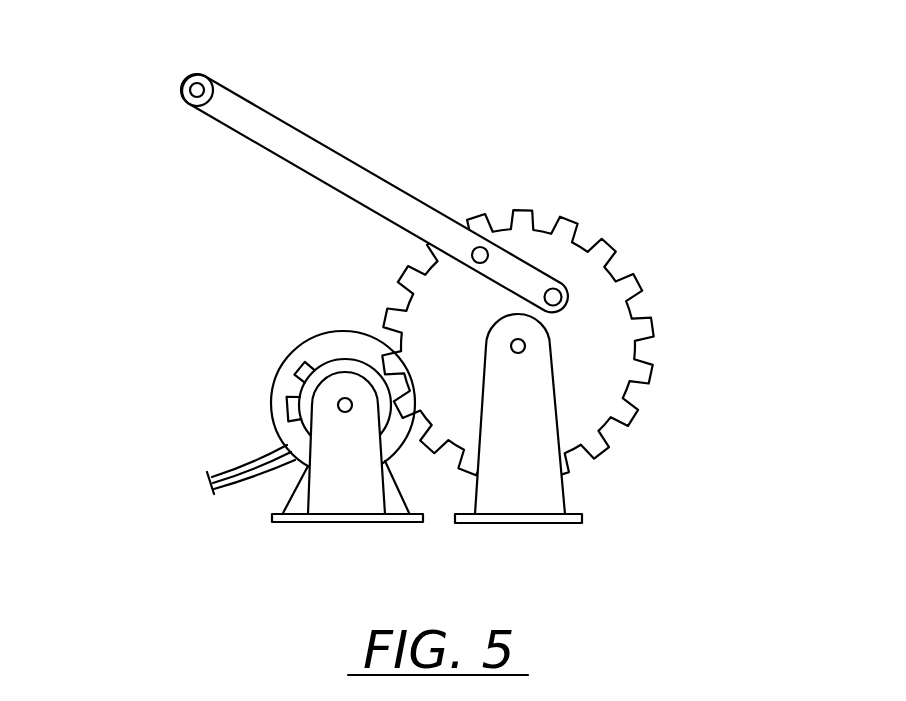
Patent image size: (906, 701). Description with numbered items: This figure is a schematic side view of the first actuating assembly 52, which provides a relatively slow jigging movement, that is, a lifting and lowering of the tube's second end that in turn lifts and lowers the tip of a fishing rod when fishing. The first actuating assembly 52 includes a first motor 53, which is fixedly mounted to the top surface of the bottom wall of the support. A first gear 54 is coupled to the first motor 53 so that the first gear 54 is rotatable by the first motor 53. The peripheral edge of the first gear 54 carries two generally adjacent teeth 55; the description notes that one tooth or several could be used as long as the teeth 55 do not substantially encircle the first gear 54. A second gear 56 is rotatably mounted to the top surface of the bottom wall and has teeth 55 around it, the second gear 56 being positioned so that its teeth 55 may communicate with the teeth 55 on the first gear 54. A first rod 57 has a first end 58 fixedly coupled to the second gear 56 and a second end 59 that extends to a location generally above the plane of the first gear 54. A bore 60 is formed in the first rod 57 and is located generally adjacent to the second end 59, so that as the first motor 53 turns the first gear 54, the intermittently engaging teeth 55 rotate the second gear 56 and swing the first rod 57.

The first actuating assembly 52 is at (635, 61).
The first motor 53 is at (290, 353).
The first gear 54 is at (340, 358).
The teeth 55 is at (440, 304).
The second gear 56 is at (640, 312).
The first rod 57 is at (338, 157).
The first end 58 is at (568, 295).
The second end 59 is at (182, 90).
The bore 60 is at (207, 82).